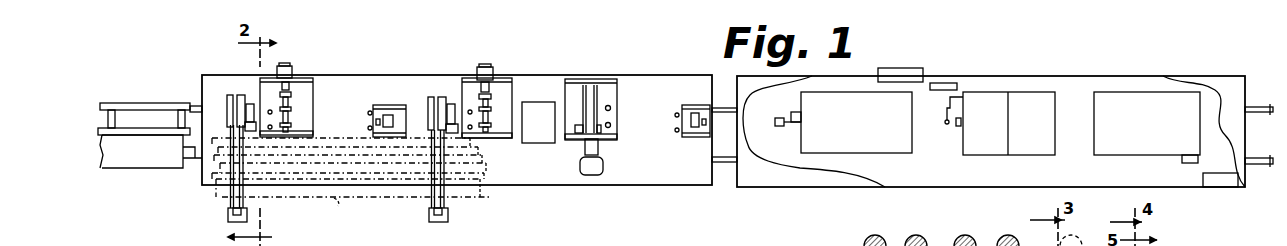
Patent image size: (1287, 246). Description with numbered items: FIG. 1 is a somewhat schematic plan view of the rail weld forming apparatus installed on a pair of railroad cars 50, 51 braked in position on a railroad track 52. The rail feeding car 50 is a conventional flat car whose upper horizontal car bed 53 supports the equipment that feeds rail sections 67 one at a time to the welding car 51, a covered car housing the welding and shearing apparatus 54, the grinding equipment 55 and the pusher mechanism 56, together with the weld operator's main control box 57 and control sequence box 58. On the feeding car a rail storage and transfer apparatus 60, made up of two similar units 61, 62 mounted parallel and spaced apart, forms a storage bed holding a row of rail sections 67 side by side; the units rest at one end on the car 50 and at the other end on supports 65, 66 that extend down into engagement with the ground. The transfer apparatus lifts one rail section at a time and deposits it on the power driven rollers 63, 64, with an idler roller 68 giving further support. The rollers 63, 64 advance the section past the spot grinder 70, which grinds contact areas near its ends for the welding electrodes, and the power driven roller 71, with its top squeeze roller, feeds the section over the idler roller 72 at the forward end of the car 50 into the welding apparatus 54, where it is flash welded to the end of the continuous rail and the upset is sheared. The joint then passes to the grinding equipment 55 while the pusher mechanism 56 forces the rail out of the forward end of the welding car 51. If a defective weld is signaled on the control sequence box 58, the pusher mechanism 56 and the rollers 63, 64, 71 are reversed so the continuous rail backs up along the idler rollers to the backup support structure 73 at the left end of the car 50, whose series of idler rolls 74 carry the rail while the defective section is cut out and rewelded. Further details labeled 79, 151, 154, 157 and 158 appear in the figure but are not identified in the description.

The rail feeding car 50 is at (516, 178).
The welding car 51 is at (1042, 77).
The railroad track 52 is at (196, 106).
The car bed 53 is at (643, 78).
The welding and shearing apparatus 54 is at (841, 91).
The grinding equipment 55 is at (1005, 91).
The pusher mechanism 56 is at (1141, 91).
The main control box 57 is at (896, 68).
The control sequence box 58 is at (941, 83).
The rail storage and transfer apparatus 60 is at (232, 152).
The first storage and transfer unit 61 is at (232, 168).
The second storage and transfer unit 62 is at (468, 165).
The power driven roller 63 is at (299, 109).
The power driven roller 64 is at (496, 105).
The support 65 is at (230, 220).
The support 66 is at (430, 216).
The rail sections 67 is at (337, 200).
The idler roller 68 is at (390, 103).
The spot grinder 70 is at (540, 101).
The power driven roller 71 is at (612, 100).
The idler roller 72 is at (697, 103).
The backup support structure 73 is at (128, 172).
The idler rolls 74 is at (178, 110).
The post head 79 is at (240, 95).
The guide 151 is at (374, 122).
The gripper 154 is at (394, 118).
The lower roller 157 is at (369, 128).
The upper roller 158 is at (369, 112).